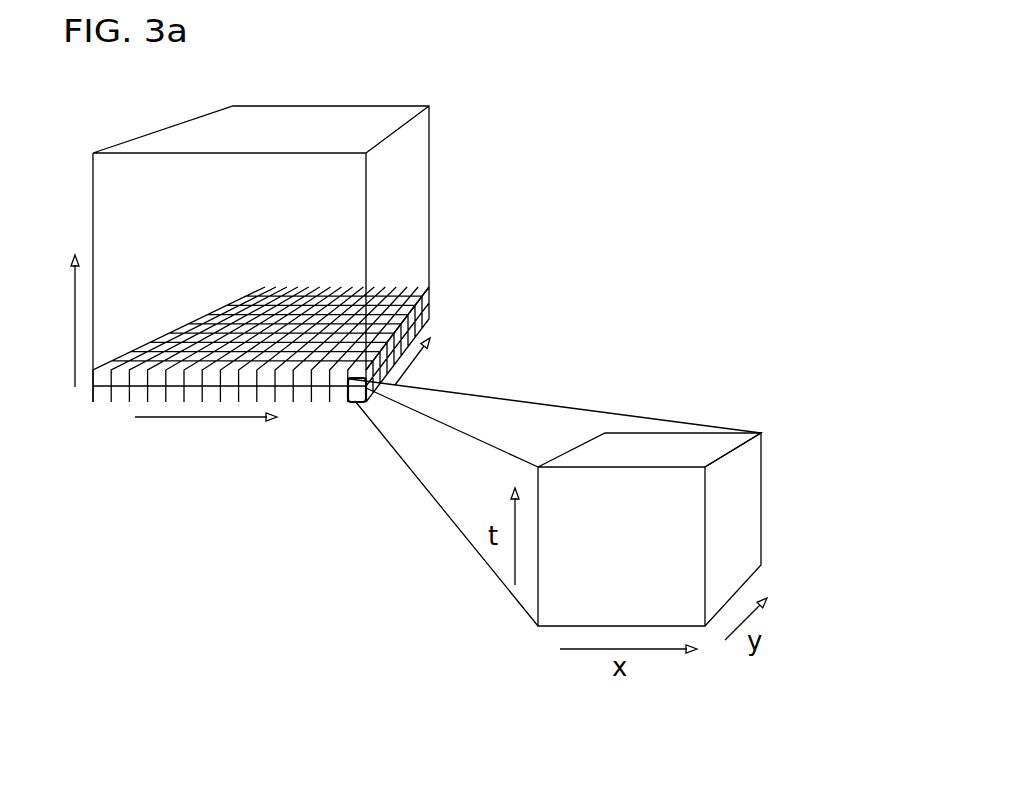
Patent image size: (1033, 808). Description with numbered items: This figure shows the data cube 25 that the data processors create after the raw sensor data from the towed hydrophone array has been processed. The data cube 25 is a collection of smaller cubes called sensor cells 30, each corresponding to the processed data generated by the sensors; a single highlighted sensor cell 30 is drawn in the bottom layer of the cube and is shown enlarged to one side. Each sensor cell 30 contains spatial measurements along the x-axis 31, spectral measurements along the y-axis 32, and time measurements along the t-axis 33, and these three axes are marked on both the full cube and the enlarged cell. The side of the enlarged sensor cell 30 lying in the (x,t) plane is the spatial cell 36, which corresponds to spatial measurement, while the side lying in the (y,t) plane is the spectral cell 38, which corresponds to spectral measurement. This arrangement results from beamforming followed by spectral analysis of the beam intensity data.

The data cube 25 is at (458, 68).
The sensor cell 30 is at (353, 405).
The x-axis 31 is at (115, 438).
The y-axis 32 is at (440, 370).
The t-axis 33 is at (58, 300).
The spatial cell 36 is at (563, 590).
The spectral cell 38 is at (748, 530).